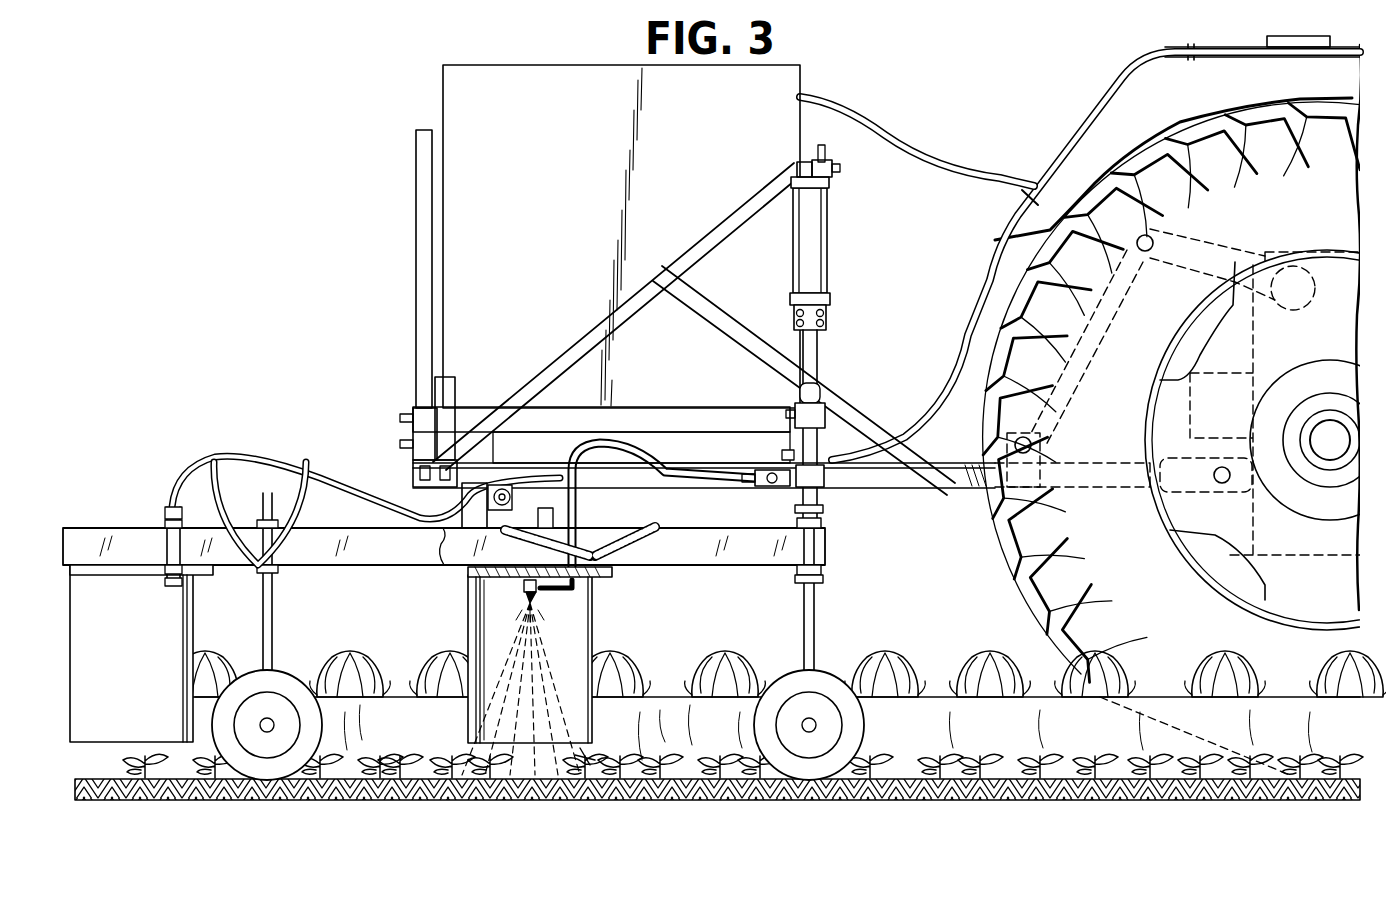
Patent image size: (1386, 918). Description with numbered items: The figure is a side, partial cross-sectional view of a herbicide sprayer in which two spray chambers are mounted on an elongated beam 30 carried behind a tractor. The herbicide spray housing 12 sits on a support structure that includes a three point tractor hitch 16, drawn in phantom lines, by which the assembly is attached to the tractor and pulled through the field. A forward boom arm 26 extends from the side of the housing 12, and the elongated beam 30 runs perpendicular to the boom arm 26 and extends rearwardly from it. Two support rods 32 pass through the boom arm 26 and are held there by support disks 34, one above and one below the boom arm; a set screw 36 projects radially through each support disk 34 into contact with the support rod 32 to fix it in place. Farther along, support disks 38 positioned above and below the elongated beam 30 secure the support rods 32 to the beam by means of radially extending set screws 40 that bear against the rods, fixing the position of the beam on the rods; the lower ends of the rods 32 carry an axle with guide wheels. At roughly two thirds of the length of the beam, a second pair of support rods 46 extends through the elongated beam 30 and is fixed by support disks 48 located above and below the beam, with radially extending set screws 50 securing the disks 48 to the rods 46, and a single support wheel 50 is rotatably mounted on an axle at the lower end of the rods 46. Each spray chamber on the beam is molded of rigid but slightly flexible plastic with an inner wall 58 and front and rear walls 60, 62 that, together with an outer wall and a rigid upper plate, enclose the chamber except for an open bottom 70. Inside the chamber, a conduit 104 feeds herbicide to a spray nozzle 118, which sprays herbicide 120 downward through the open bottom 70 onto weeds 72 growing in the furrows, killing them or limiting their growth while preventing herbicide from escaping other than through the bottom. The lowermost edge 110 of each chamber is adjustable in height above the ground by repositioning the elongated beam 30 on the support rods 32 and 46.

The herbicide spray housing 12 is at (570, 206).
The three point tractor hitch 16 is at (1105, 470).
The boom arm 26 is at (885, 490).
The elongated beam 30 is at (702, 562).
The support rod 32 is at (815, 630).
The support disk 34 is at (830, 440).
The set screw 36 is at (803, 447).
The support disk 38 is at (835, 530).
The set screw 40 is at (800, 522).
The support rod 46 is at (272, 622).
The support disk 48 is at (306, 465).
The support wheel 50 is at (228, 465).
The inner wall 58 is at (583, 606).
The front wall 60 is at (193, 628).
The rear wall 62 is at (470, 628).
The open bottom 70 is at (585, 748).
The weeds 72 is at (400, 772).
The conduit 104 is at (548, 590).
The lowermost edge 110 is at (452, 760).
The spray nozzle 118 is at (505, 590).
The herbicide 120 is at (545, 685).